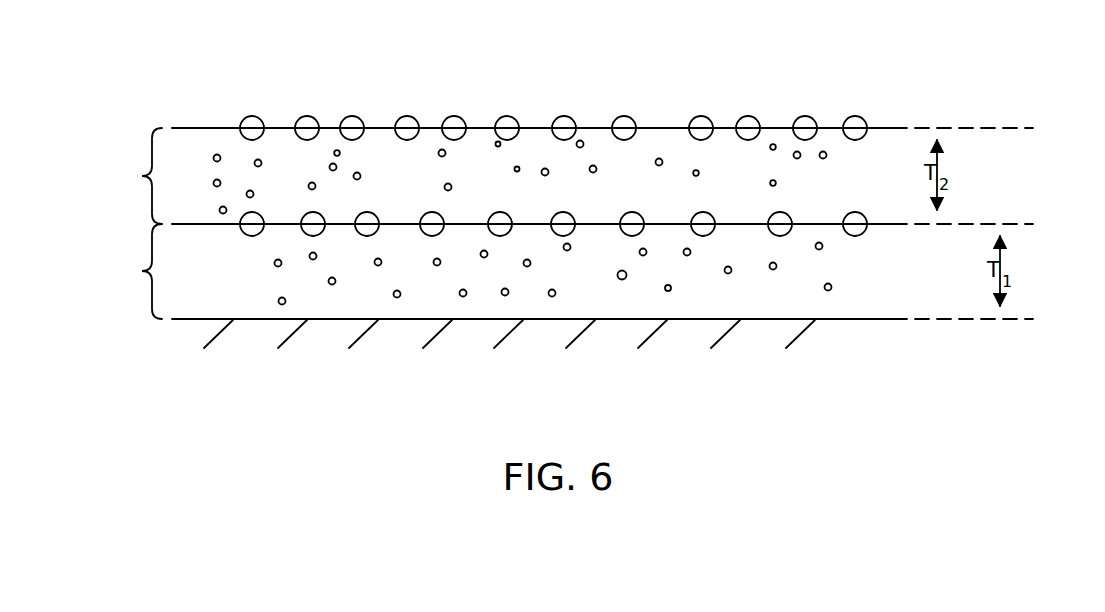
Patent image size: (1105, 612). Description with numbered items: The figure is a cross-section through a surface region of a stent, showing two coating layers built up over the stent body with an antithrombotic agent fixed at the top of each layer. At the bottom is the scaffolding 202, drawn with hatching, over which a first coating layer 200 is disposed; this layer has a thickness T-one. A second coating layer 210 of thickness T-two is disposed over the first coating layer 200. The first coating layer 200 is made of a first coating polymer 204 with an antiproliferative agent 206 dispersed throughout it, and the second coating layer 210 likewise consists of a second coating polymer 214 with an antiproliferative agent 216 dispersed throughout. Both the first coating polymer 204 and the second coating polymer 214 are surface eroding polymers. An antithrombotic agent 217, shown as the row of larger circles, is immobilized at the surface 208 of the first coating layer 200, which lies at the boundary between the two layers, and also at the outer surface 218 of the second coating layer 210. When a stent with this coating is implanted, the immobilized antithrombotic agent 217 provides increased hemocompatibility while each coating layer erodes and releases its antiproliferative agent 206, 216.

The first coating layer 200 is at (564, 271).
The scaffolding 202 is at (803, 332).
The first coating polymer 204 is at (798, 290).
The antiproliferative agent 206 is at (463, 297).
The surface of first coating layer 208 is at (668, 226).
The second coating layer 210 is at (494, 176).
The second coating polymer 214 is at (632, 163).
The antiproliferative agent 216 is at (337, 150).
The antithrombotic agent 217 is at (454, 127).
The surface of second coating layer 218 is at (535, 127).